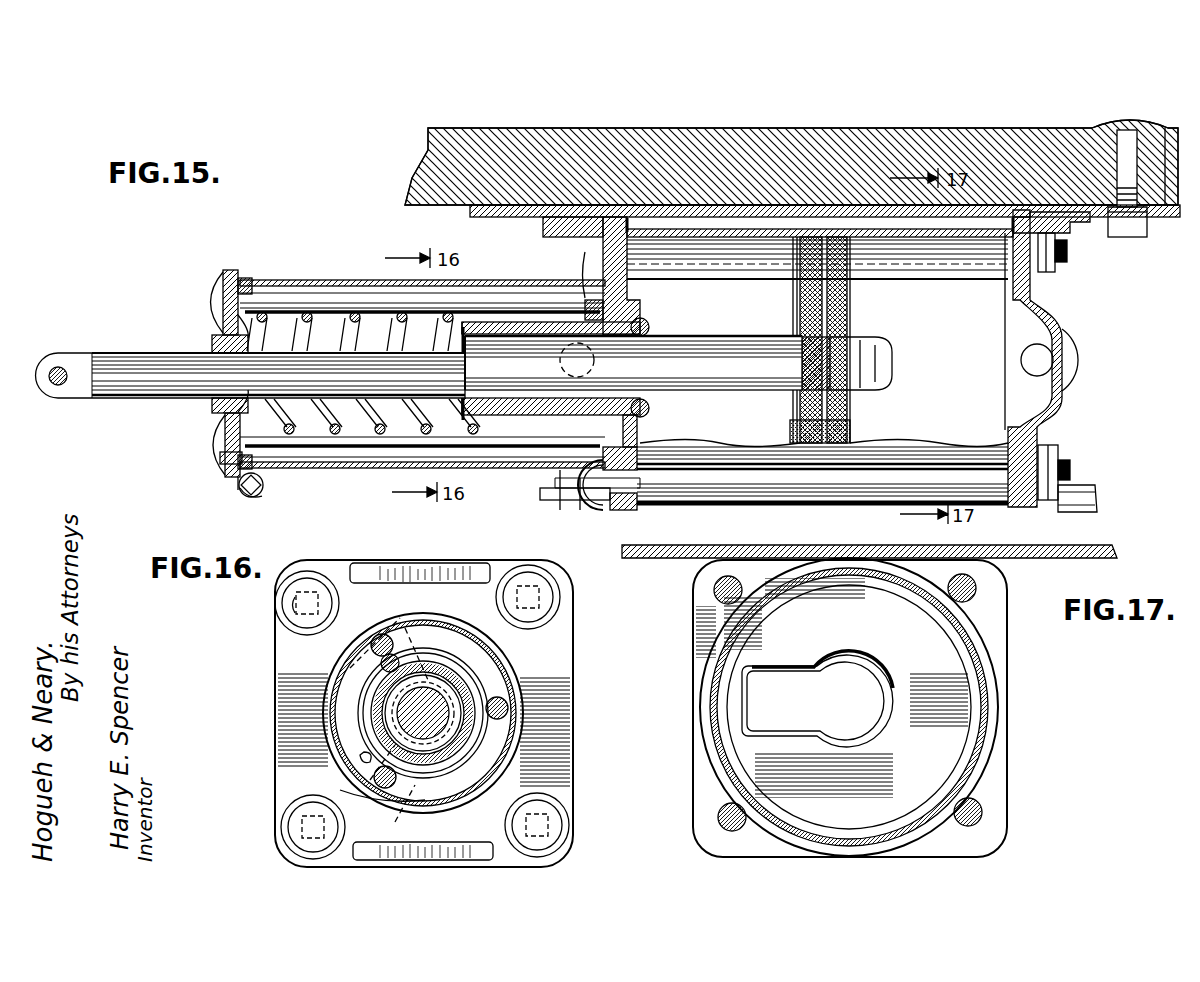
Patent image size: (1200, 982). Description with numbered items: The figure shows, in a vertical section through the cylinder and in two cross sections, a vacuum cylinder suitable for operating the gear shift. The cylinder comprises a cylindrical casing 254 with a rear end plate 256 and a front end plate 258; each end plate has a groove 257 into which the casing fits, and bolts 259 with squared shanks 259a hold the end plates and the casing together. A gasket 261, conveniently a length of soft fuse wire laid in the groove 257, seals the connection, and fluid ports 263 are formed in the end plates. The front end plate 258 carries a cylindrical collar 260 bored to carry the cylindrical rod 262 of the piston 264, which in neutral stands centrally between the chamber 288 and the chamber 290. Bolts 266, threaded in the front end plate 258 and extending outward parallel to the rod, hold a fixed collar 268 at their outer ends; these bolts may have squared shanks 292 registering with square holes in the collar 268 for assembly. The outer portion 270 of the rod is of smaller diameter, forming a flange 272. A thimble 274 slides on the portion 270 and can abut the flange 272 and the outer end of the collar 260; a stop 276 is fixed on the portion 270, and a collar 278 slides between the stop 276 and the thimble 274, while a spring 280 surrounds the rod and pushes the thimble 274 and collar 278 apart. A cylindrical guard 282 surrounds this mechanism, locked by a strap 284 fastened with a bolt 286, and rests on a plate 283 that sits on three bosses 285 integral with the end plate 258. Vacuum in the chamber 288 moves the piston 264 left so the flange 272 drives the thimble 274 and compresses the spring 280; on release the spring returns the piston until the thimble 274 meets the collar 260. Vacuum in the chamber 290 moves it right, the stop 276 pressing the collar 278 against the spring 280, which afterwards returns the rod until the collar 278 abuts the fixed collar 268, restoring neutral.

In FIG. 15, the cylindrical casing 254 is at (684, 233).
In FIG. 17, the cylindrical casing 254 is at (985, 694).
In FIG. 15, the end plate 256 is at (1030, 291).
In FIG. 17, the end plate 256 is at (913, 641).
In FIG. 15, the groove 257 is at (1014, 226).
In FIG. 15, the front end plate 258 is at (610, 250).
In FIG. 15, the bolt 259 is at (988, 478).
In FIG. 16, the bolt 259 is at (540, 827).
In FIG. 17, the bolt 259 is at (965, 822).
In FIG. 15, the squared shank 259a is at (605, 513).
In FIG. 16, the squared shank 259a is at (293, 608).
In FIG. 15, the cylindrical collar 260 is at (500, 305).
In FIG. 15, the gasket 261 is at (1028, 223).
In FIG. 15, the cylindrical rod 262 is at (633, 363).
In FIG. 15, the fluid port 263 is at (592, 364).
In FIG. 17, the fluid port 263 is at (817, 699).
In FIG. 15, the piston 264 is at (838, 311).
In FIG. 15, the bolt 266 is at (487, 443).
In FIG. 16, the bolt 266 is at (502, 708).
In FIG. 15, the collar 268 is at (228, 272).
In FIG. 15, the outer portion of piston rod 270 is at (187, 375).
In FIG. 16, the outer portion of piston rod 270 is at (423, 709).
In FIG. 15, the flange 272 is at (480, 372).
In FIG. 15, the thimble 274 is at (483, 317).
In FIG. 15, the stop 276 is at (213, 347).
In FIG. 15, the collar 278 is at (222, 325).
In FIG. 15, the spring 280 is at (307, 330).
In FIG. 16, the spring 280 is at (463, 740).
In FIG. 15, the cylindrical guard 282 is at (348, 283).
In FIG. 16, the cylindrical guard 282 is at (330, 698).
In FIG. 15, the plate 283 is at (556, 494).
In FIG. 16, the plate 283 is at (377, 797).
In FIG. 15, the strap 284 is at (245, 280).
In FIG. 15, the boss 285 is at (587, 480).
In FIG. 16, the boss 285 is at (507, 710).
In FIG. 15, the bolt 286 is at (263, 485).
In FIG. 15, the chamber 288 is at (709, 317).
In FIG. 15, the chamber 290 is at (941, 354).
In FIG. 15, the squared shank 292 is at (778, 551).